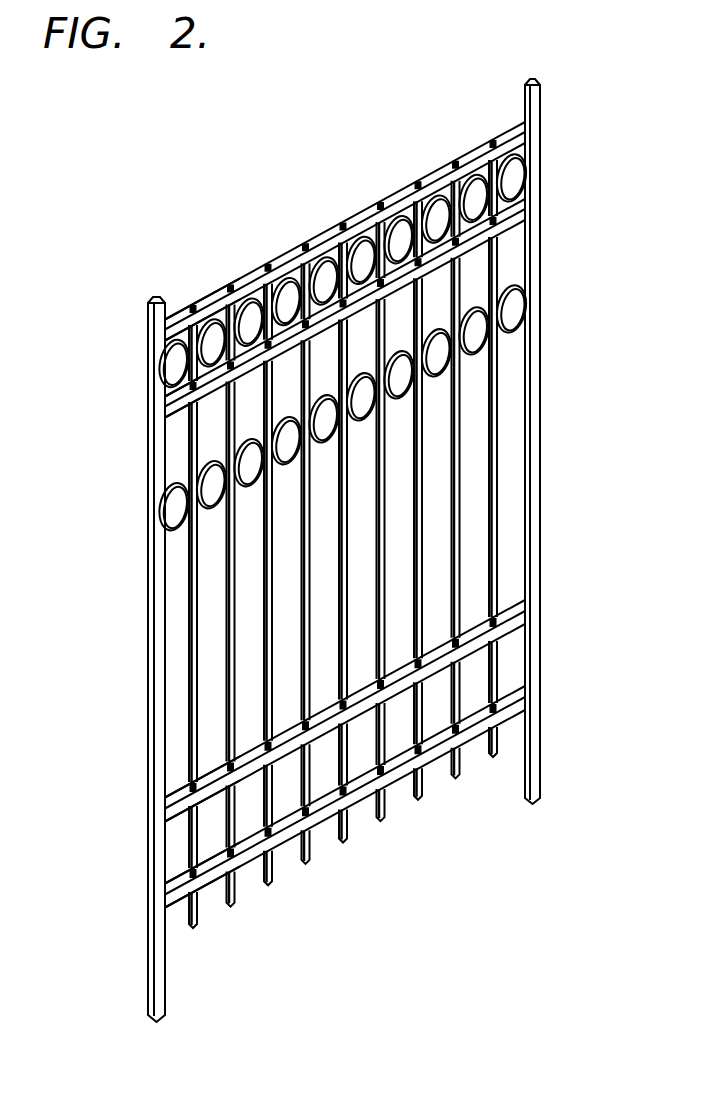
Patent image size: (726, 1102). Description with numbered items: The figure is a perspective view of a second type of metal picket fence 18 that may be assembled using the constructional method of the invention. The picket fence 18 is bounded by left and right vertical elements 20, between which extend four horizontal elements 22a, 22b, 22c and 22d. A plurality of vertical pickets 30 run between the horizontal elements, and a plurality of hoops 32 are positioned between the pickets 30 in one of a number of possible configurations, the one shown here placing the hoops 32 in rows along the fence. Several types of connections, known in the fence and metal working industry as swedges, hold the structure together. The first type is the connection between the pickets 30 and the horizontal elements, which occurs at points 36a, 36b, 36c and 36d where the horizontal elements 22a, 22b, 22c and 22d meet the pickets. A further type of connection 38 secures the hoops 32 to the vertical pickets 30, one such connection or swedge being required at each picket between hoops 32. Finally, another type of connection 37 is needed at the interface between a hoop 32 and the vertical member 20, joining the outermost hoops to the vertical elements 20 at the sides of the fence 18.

The metal picket fence 18 is at (397, 983).
The vertical element 20 is at (539, 423).
The horizontal element 22a is at (345, 221).
The horizontal element 22b is at (432, 200).
The horizontal element 22c is at (500, 627).
The horizontal element 22d is at (478, 713).
The vertical picket 30 is at (498, 498).
The hoop 32 is at (516, 283).
The connection point 36a is at (230, 292).
The connection point 36b is at (166, 383).
The connection point 36c is at (228, 765).
The connection point 36d is at (237, 864).
The connection 37 is at (152, 400).
The connection 38 is at (170, 502).